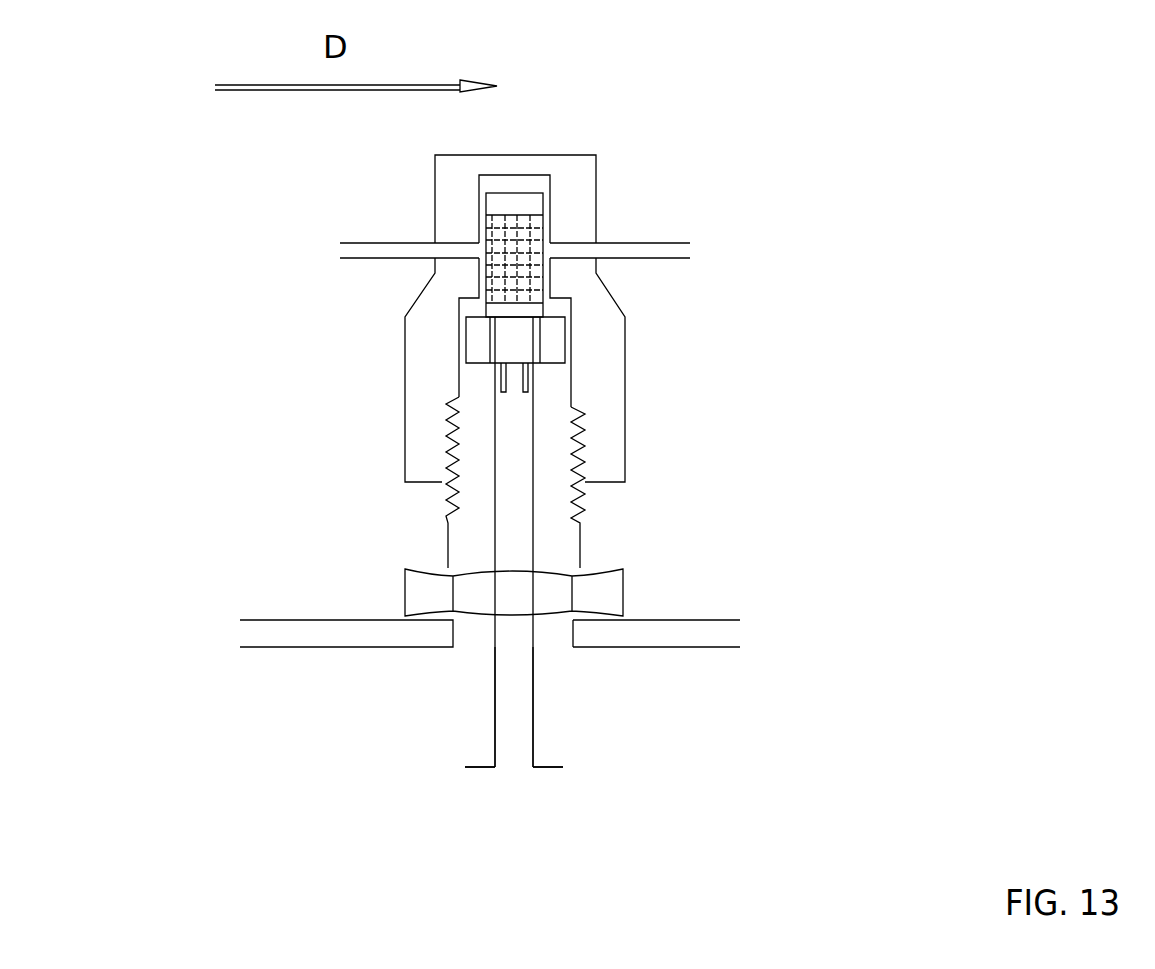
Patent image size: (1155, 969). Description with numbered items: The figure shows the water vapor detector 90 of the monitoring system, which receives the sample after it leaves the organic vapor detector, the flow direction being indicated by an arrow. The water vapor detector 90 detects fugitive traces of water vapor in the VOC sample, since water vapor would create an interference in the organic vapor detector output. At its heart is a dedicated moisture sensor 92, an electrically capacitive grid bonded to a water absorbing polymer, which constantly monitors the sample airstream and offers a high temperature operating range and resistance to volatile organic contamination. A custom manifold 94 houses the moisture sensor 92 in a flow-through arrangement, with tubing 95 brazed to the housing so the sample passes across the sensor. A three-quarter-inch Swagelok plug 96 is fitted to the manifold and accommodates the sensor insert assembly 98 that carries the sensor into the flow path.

The water vapor detector 90 is at (298, 517).
The moisture sensor 92 is at (527, 198).
The manifold 94 is at (649, 416).
The tubing 95 is at (323, 262).
The plug 96 is at (654, 599).
The sensor insert assembly 98 is at (445, 757).